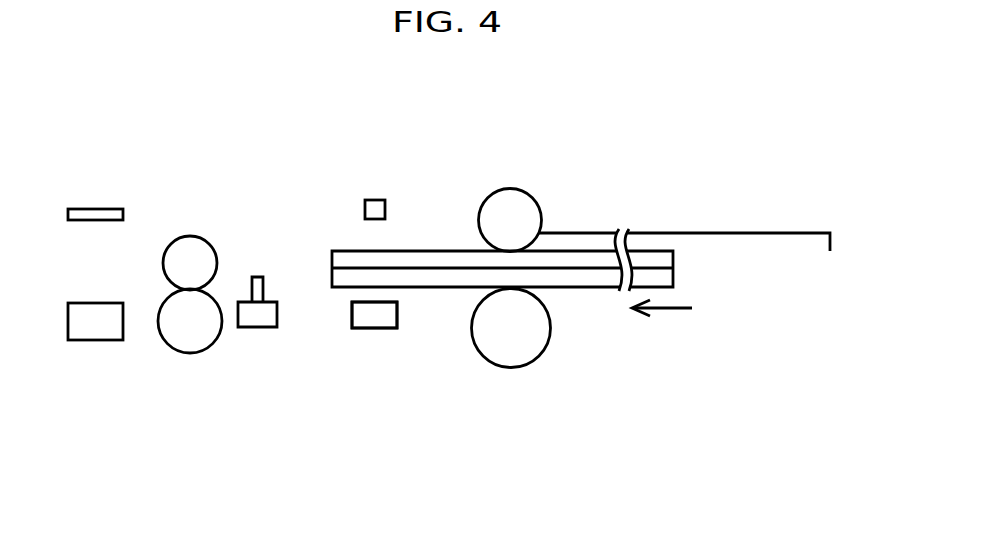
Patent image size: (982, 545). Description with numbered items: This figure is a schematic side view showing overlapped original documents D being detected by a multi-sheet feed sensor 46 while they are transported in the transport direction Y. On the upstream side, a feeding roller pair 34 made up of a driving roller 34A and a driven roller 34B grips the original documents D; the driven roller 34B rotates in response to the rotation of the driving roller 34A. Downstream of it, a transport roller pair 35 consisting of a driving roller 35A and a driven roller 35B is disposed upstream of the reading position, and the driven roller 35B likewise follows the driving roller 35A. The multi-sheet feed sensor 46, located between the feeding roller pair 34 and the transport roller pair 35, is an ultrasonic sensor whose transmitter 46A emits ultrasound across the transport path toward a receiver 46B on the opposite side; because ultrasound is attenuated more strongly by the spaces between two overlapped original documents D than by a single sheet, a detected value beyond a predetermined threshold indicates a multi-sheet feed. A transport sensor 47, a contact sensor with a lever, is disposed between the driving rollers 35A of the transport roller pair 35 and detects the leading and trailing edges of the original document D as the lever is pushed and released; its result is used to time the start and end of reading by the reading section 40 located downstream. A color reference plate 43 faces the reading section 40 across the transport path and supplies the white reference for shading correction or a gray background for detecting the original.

The feeding roller pair 34 is at (539, 276).
The driving roller 34A is at (508, 368).
The driven roller 34B is at (528, 188).
The transport roller pair 35 is at (220, 293).
The driving roller 35A is at (187, 353).
The driven roller 35B is at (207, 238).
The reading section 40 is at (93, 340).
The color reference plate 43 is at (100, 209).
The multi-sheet feed sensor 46 is at (373, 330).
The transmitter 46A is at (375, 200).
The receiver 46B is at (397, 313).
The transport sensor 47 is at (255, 327).
The original document D is at (424, 268).
The transport direction Y is at (662, 322).